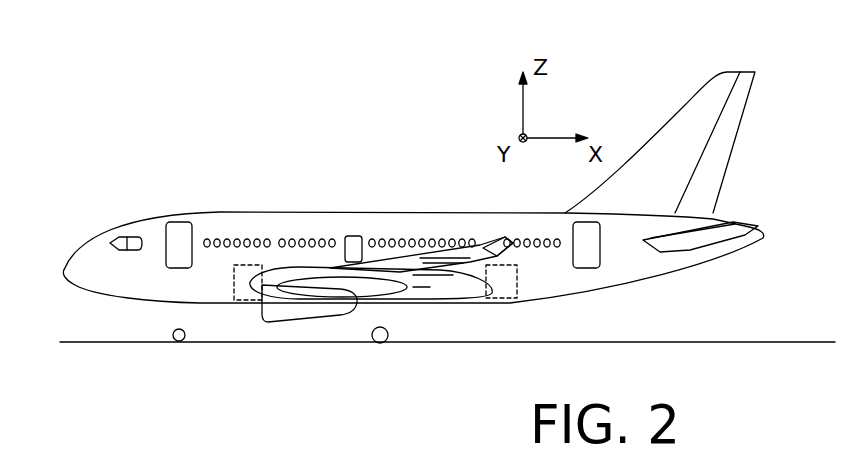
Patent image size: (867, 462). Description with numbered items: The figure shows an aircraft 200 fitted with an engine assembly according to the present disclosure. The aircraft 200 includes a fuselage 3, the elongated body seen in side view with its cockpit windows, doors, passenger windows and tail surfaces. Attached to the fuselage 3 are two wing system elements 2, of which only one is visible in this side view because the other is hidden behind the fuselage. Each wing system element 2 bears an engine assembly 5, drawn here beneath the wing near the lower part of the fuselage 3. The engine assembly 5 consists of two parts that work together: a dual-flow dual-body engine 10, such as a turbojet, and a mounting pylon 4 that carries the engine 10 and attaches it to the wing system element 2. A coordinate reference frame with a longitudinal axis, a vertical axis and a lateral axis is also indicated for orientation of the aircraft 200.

The aircraft 200 is at (413, 242).
The wing system element 2 is at (377, 270).
The fuselage 3 is at (229, 232).
The mounting pylon 4 is at (326, 276).
The engine assembly 5 is at (245, 330).
The dual-flow dual-body engine 10 is at (313, 312).